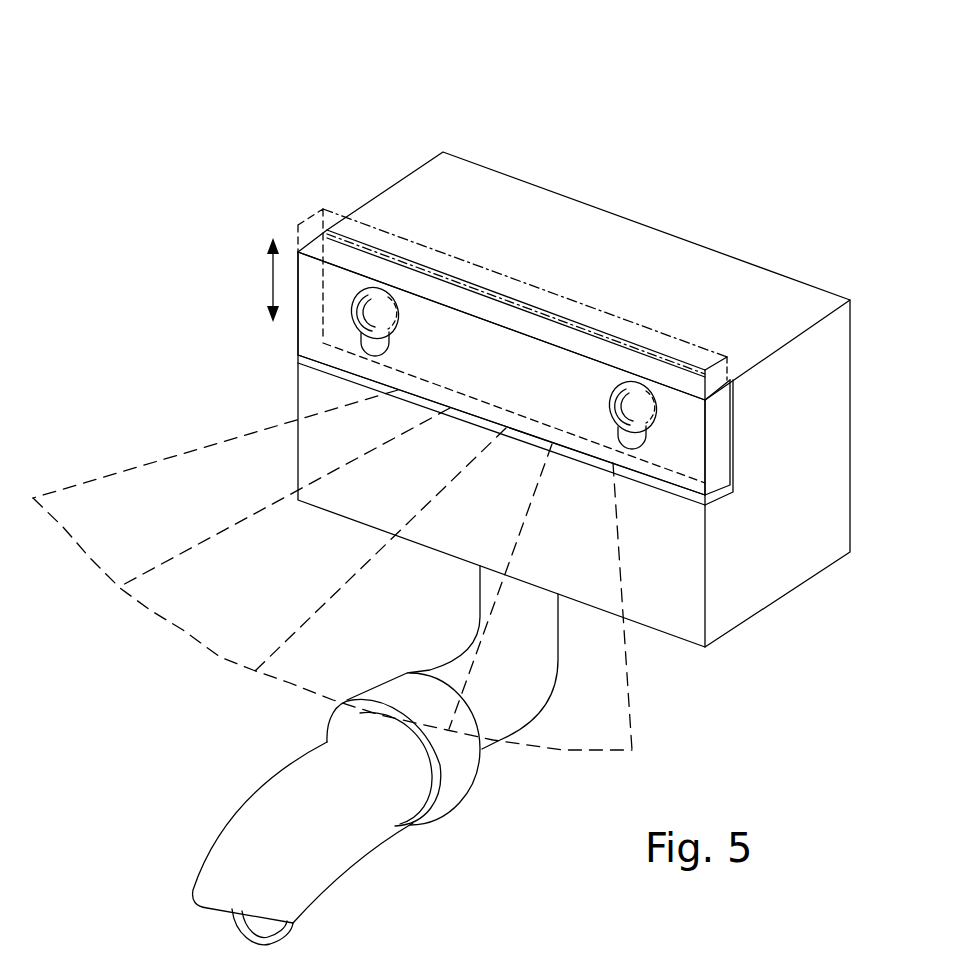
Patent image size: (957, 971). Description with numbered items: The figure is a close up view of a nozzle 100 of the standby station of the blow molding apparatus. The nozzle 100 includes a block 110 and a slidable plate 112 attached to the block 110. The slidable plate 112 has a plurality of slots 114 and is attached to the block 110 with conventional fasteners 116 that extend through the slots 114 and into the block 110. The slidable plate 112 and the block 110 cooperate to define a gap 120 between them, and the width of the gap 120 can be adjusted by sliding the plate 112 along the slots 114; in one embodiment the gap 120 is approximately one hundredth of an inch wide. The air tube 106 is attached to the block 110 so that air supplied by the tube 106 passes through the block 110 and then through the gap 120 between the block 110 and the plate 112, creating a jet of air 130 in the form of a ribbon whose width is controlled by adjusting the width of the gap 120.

The nozzle 100 is at (379, 128).
The tube 106 is at (307, 858).
The block 110 is at (595, 227).
The slidable plate 112 is at (693, 425).
The slots 114 is at (368, 334).
The fasteners 116 is at (643, 402).
The gap 120 is at (693, 500).
The jet of air 130 is at (163, 458).